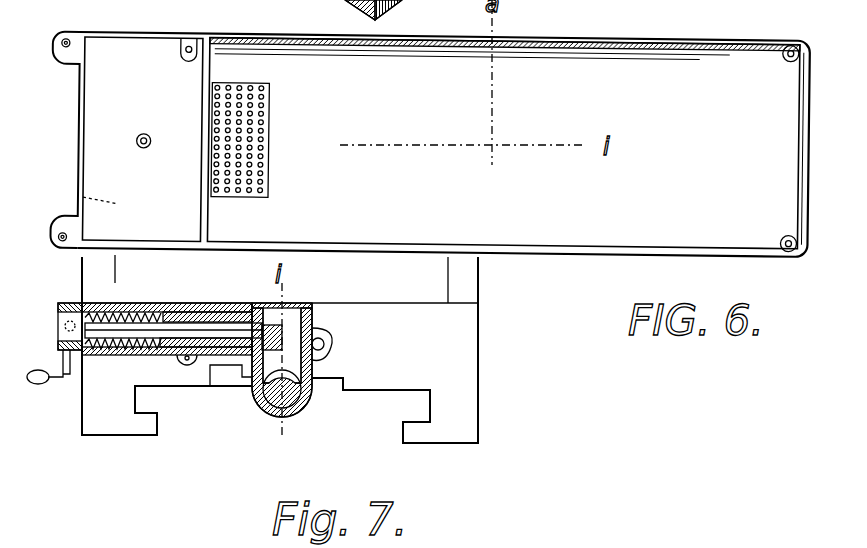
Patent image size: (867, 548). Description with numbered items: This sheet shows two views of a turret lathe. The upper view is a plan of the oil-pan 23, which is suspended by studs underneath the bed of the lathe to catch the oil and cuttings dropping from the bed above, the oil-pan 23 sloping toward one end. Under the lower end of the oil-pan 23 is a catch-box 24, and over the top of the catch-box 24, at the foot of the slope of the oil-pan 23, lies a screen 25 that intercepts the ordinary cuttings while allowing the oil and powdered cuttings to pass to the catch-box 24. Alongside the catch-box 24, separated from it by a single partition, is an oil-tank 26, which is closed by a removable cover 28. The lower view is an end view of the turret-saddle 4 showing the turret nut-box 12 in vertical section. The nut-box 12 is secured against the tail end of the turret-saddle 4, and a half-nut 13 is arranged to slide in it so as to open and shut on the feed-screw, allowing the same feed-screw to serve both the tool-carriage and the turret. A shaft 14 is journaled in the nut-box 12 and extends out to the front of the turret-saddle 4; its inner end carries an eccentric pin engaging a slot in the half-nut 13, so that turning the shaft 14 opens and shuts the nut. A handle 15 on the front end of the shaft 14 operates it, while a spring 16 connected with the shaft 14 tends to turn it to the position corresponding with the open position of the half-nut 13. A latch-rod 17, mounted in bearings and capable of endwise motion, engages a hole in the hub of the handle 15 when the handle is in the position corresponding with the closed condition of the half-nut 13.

In FIG. 6, the oil-pan 23 is at (535, 236).
In FIG. 6, the catch-box 24 is at (253, 180).
In FIG. 6, the screen 25 is at (253, 143).
In FIG. 6, the oil-tank 26 is at (85, 197).
In FIG. 6, the removable cover 28 is at (110, 157).
In FIG. 7, the turret-saddle 4 is at (470, 338).
In FIG. 7, the nut-box 12 is at (313, 368).
In FIG. 7, the half-nut 13 is at (292, 347).
In FIG. 7, the shaft 14 is at (192, 328).
In FIG. 7, the handle 15 is at (63, 378).
In FIG. 7, the spring 16 is at (108, 312).
In FIG. 7, the latch-rod 17 is at (60, 318).